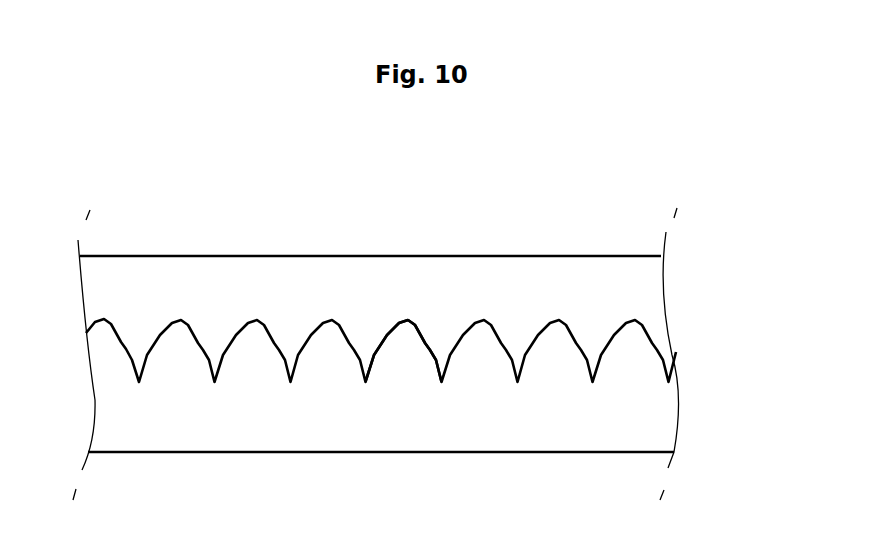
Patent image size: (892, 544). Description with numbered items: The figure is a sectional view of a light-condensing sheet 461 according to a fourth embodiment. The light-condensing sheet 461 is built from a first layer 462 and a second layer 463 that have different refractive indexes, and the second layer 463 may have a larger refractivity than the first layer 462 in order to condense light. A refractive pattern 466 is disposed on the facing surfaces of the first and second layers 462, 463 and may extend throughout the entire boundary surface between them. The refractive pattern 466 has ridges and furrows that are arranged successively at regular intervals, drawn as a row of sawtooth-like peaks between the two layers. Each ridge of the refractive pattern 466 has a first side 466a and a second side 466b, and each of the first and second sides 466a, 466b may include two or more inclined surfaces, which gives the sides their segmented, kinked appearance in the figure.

The light-condensing sheet 461 is at (445, 354).
The first layer 462 is at (420, 424).
The second layer 463 is at (656, 291).
The refractive pattern 466 is at (381, 385).
The first side 466a is at (430, 359).
The second side 466b is at (378, 364).